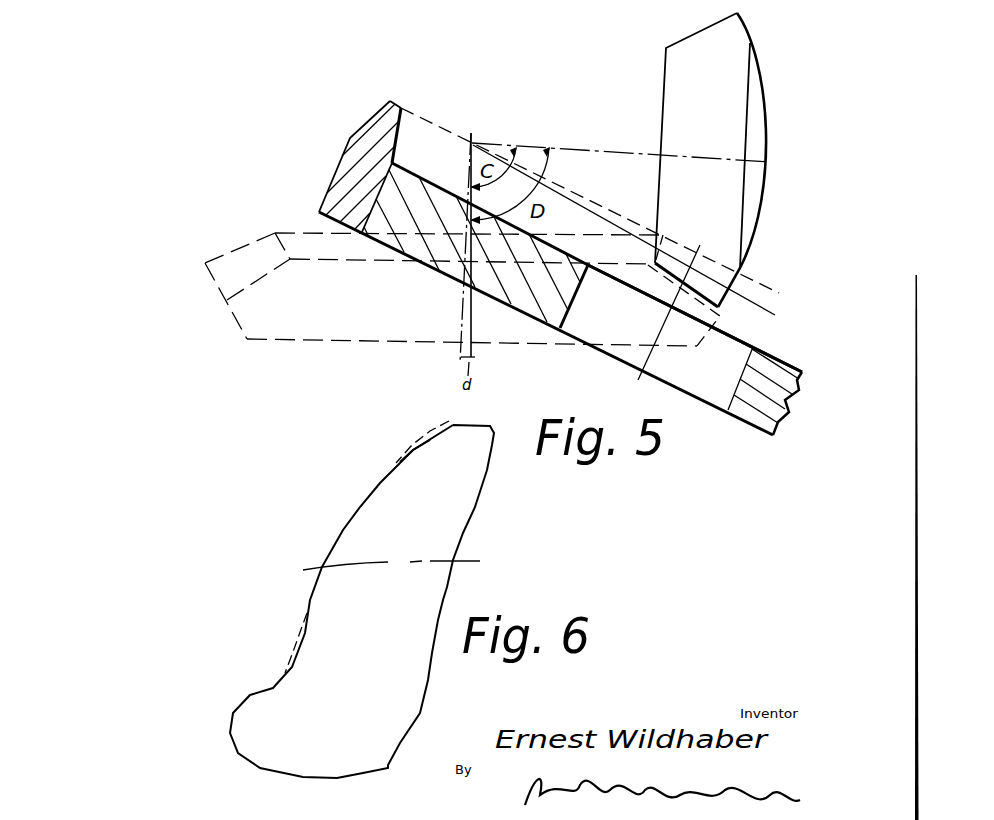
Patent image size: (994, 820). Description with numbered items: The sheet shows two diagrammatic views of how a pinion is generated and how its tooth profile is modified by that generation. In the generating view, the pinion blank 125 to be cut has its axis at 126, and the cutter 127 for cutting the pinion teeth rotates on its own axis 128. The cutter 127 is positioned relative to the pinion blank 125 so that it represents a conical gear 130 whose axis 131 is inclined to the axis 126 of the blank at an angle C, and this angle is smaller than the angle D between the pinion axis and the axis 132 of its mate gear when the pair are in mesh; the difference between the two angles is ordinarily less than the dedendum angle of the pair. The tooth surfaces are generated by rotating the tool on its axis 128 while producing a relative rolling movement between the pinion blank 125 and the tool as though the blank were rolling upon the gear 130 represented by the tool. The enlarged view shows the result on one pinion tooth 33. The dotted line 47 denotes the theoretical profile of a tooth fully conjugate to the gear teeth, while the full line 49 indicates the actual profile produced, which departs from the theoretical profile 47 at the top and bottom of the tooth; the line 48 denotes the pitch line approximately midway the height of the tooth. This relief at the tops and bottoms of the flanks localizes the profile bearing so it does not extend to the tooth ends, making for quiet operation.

In FIG. 5, the pinion blank 125 is at (688, 50).
In FIG. 5, the axis of the pinion blank 126 is at (605, 148).
In FIG. 5, the cutter 127 is at (740, 343).
In FIG. 5, the axis of the cutter 128 is at (648, 361).
In FIG. 5, the conical gear 130 is at (387, 323).
In FIG. 5, the axis of the conical gear 131 is at (473, 328).
In FIG. 5, the axis of the mate gear 132 is at (463, 312).
In FIG. 6, the pinion tooth 33 is at (453, 533).
In FIG. 6, the theoretical profile 47 is at (412, 448).
In FIG. 6, the pitch line 48 is at (387, 554).
In FIG. 6, the actual profile 49 is at (414, 448).